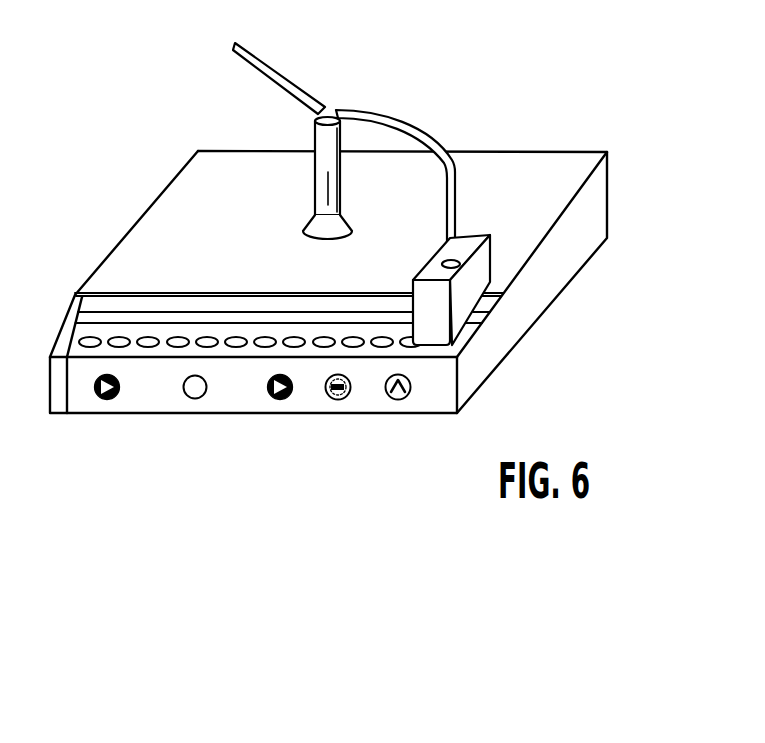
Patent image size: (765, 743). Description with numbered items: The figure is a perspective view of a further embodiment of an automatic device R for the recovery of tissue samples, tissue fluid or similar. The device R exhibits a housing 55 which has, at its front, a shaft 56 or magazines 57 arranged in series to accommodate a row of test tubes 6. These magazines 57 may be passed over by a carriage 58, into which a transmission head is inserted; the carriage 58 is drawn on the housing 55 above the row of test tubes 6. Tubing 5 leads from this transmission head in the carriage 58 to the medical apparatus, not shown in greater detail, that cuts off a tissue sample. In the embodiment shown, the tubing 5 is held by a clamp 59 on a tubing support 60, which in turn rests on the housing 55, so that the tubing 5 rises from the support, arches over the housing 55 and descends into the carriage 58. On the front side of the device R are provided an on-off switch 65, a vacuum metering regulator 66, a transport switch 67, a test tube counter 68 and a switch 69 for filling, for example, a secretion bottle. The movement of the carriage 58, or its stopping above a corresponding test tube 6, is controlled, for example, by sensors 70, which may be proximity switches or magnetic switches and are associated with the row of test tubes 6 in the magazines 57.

The device R is at (356, 257).
The housing 55 is at (597, 212).
The shaft 56 is at (67, 413).
The test tubes 6 is at (123, 340).
The magazines 57 is at (130, 350).
The sensors 70 is at (349, 350).
The on-off switch 65 is at (107, 400).
The vacuum metering regulator 66 is at (195, 398).
The transport switch 67 is at (280, 400).
The test tube counter 68 is at (338, 400).
The switch 69 is at (398, 400).
The tubing support 60 is at (334, 186).
The clamp 59 is at (333, 108).
The tubing 5 is at (428, 140).
The carriage 58 is at (500, 230).